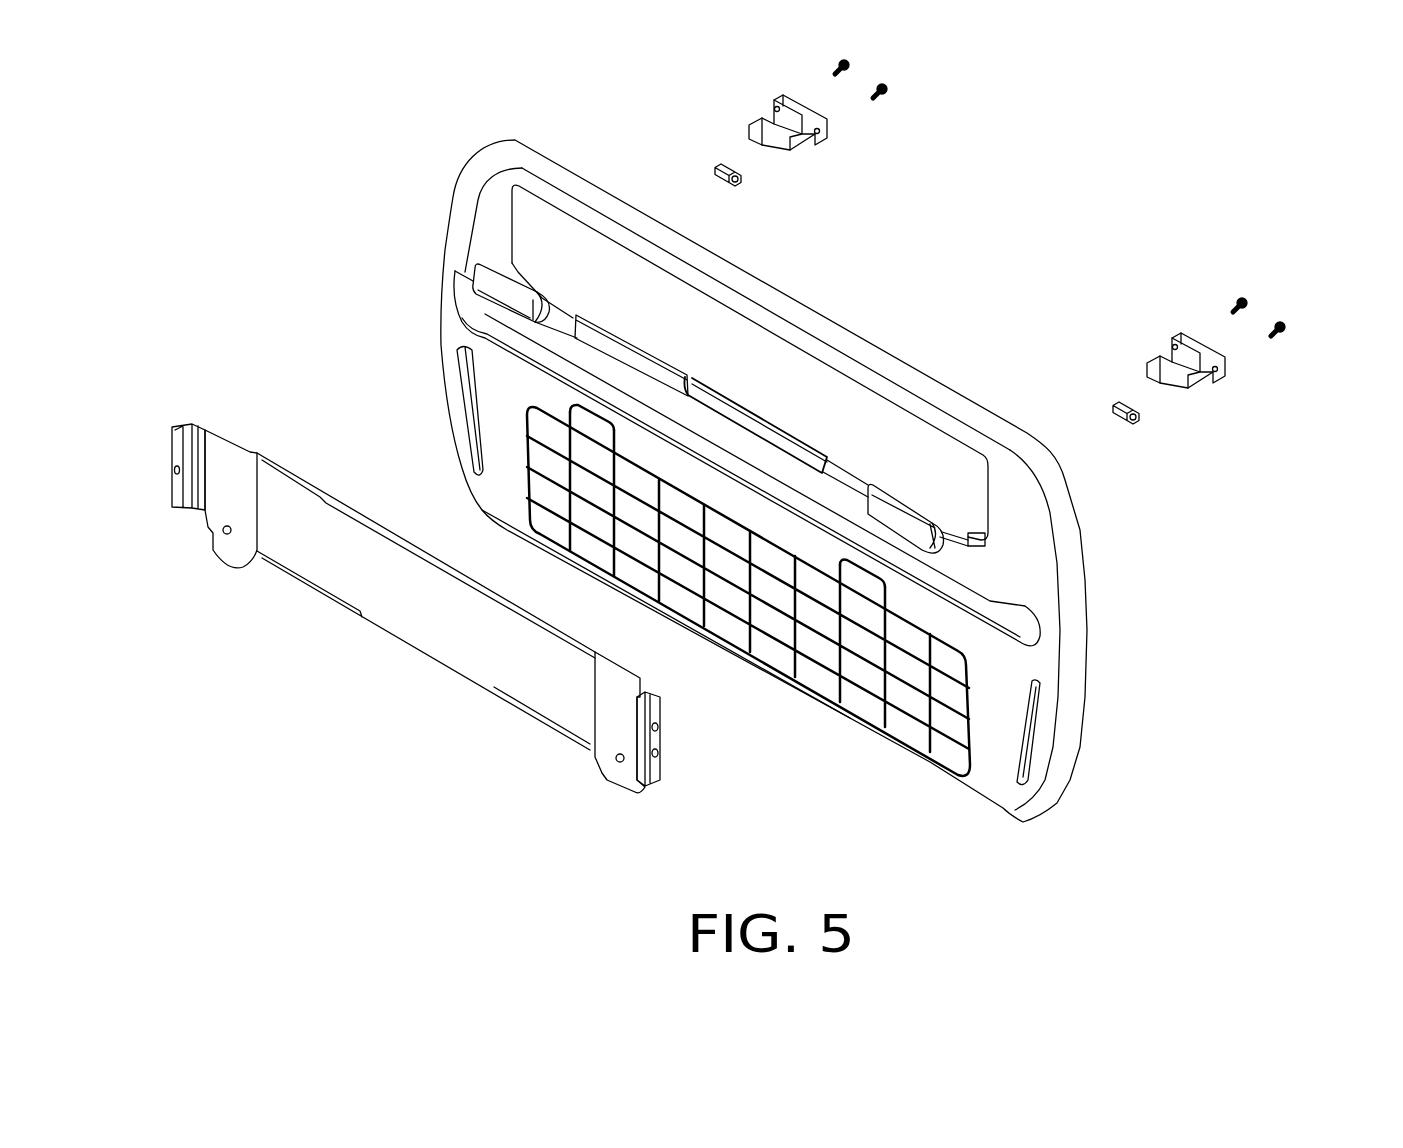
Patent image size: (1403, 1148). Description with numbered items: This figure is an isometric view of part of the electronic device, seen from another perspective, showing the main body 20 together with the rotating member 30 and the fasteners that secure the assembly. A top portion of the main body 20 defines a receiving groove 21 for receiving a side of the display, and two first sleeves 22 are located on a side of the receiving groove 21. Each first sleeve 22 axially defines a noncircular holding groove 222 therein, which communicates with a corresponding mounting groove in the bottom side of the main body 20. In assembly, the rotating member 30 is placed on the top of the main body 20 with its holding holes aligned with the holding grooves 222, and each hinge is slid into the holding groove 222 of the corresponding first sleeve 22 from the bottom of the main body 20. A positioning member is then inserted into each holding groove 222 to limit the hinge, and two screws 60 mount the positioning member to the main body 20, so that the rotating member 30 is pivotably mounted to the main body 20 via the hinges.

The main body 20 is at (1012, 678).
The receiving groove 21 is at (1050, 622).
The first sleeve 22 is at (883, 510).
The holding groove 222 is at (1018, 608).
The rotating member 30 is at (223, 457).
The screw 60 is at (1235, 307).